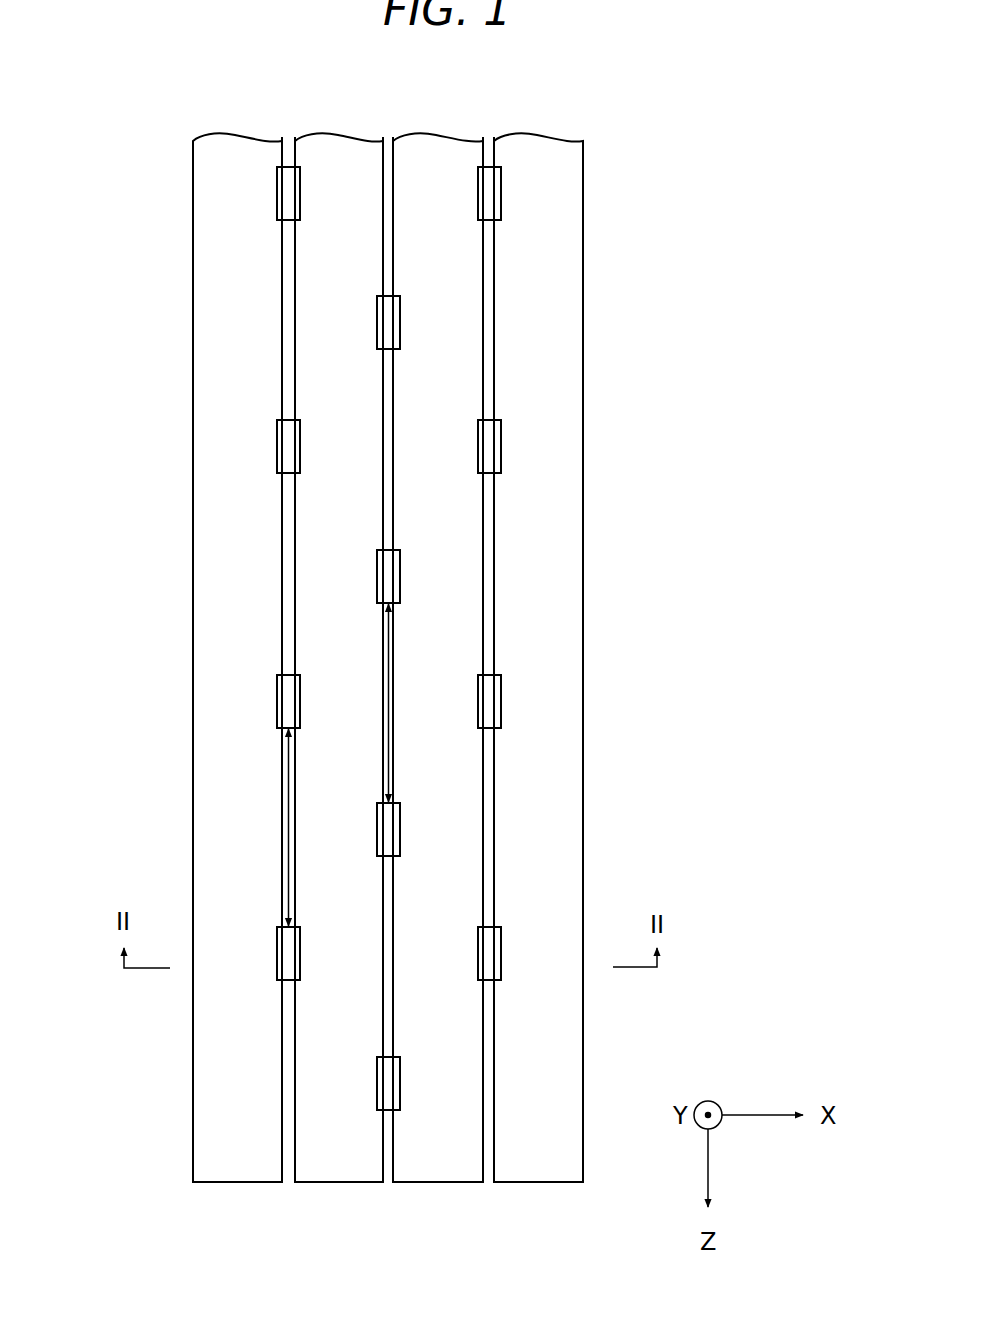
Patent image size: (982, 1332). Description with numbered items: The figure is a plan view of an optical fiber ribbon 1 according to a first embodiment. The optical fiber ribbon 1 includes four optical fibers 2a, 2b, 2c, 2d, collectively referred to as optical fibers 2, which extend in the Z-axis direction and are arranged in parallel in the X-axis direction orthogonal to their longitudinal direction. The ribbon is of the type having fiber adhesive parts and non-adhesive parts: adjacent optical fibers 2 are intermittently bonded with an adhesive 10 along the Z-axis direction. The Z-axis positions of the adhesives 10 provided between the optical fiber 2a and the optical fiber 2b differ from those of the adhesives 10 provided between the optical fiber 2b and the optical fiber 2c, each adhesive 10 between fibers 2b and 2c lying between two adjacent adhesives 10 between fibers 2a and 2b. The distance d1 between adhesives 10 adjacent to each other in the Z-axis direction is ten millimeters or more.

The optical fiber ribbon 1 is at (338, 704).
The optical fibers 2 is at (390, 704).
The optical fiber 2a is at (235, 1182).
The optical fiber 2b is at (343, 1182).
The optical fiber 2c is at (453, 1182).
The optical fiber 2d is at (538, 1182).
The adhesive 10 is at (300, 958).
The distance d1 is at (290, 812).